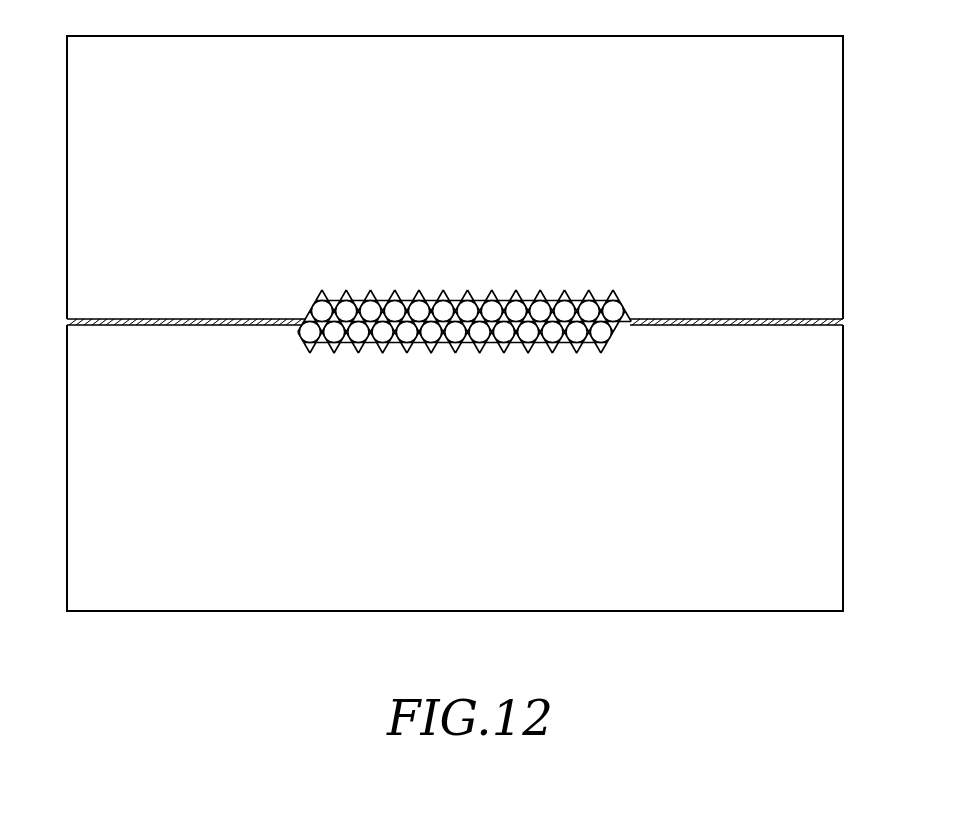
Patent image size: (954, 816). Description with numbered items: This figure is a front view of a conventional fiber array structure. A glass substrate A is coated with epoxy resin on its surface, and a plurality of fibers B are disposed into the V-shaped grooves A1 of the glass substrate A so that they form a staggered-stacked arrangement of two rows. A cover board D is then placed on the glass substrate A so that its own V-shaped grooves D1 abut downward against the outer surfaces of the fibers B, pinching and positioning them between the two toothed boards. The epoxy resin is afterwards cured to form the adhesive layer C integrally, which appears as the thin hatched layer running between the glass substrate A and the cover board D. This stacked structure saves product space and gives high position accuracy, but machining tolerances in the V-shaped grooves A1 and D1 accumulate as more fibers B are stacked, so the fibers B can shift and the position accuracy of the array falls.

The glass substrate A is at (810, 473).
The V-shaped grooves A1 is at (321, 355).
The fibers B is at (408, 334).
The adhesive layer C is at (774, 308).
The cover board D is at (815, 175).
The V-shaped grooves D1 is at (308, 288).